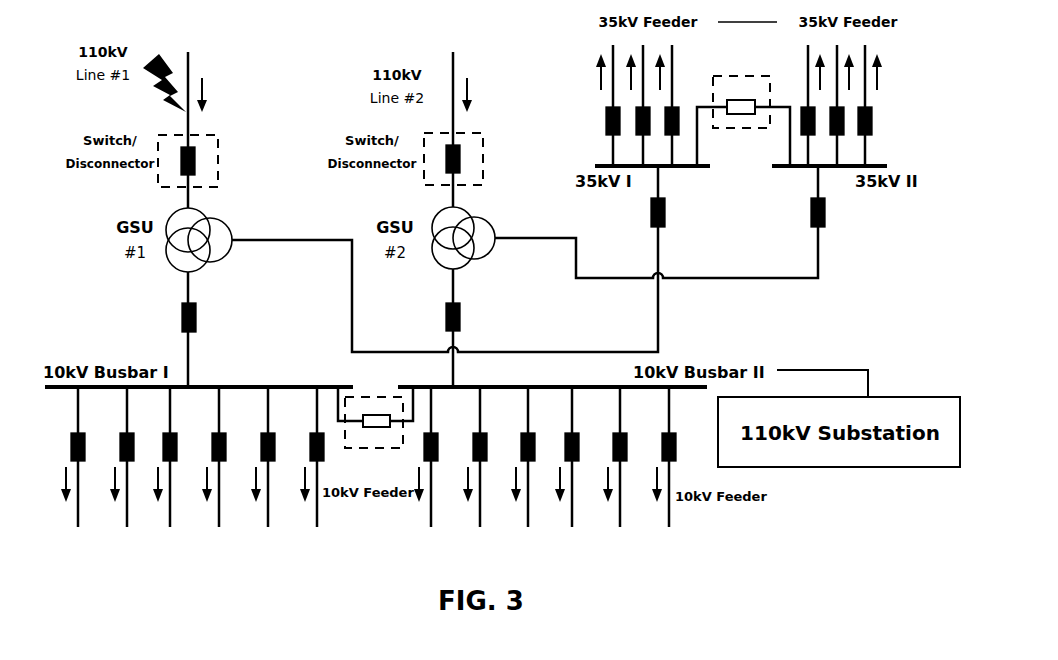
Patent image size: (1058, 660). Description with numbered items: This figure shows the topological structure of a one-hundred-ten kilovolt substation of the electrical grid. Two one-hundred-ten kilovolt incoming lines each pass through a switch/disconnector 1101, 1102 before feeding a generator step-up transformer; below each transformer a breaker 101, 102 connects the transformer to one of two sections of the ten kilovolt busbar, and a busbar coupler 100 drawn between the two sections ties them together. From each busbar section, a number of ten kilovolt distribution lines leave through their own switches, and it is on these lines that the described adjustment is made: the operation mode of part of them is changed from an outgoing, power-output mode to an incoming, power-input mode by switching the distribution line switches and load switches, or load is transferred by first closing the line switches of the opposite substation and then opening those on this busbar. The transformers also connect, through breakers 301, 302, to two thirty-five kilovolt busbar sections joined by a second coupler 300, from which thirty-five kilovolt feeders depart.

The switch/disconnector of 110kV line #1 1101 is at (155, 163).
The switch/disconnector of 110kV line #2 1102 is at (418, 162).
The circuit breaker of GSU #1 101 is at (167, 317).
The circuit breaker of GSU #2 102 is at (435, 317).
The 10kV busbar coupler 100 is at (375, 417).
The 35kV busbar coupler 300 is at (743, 121).
The circuit breaker of 35kV busbar I 301 is at (638, 214).
The circuit breaker of 35kV busbar II 302 is at (799, 214).